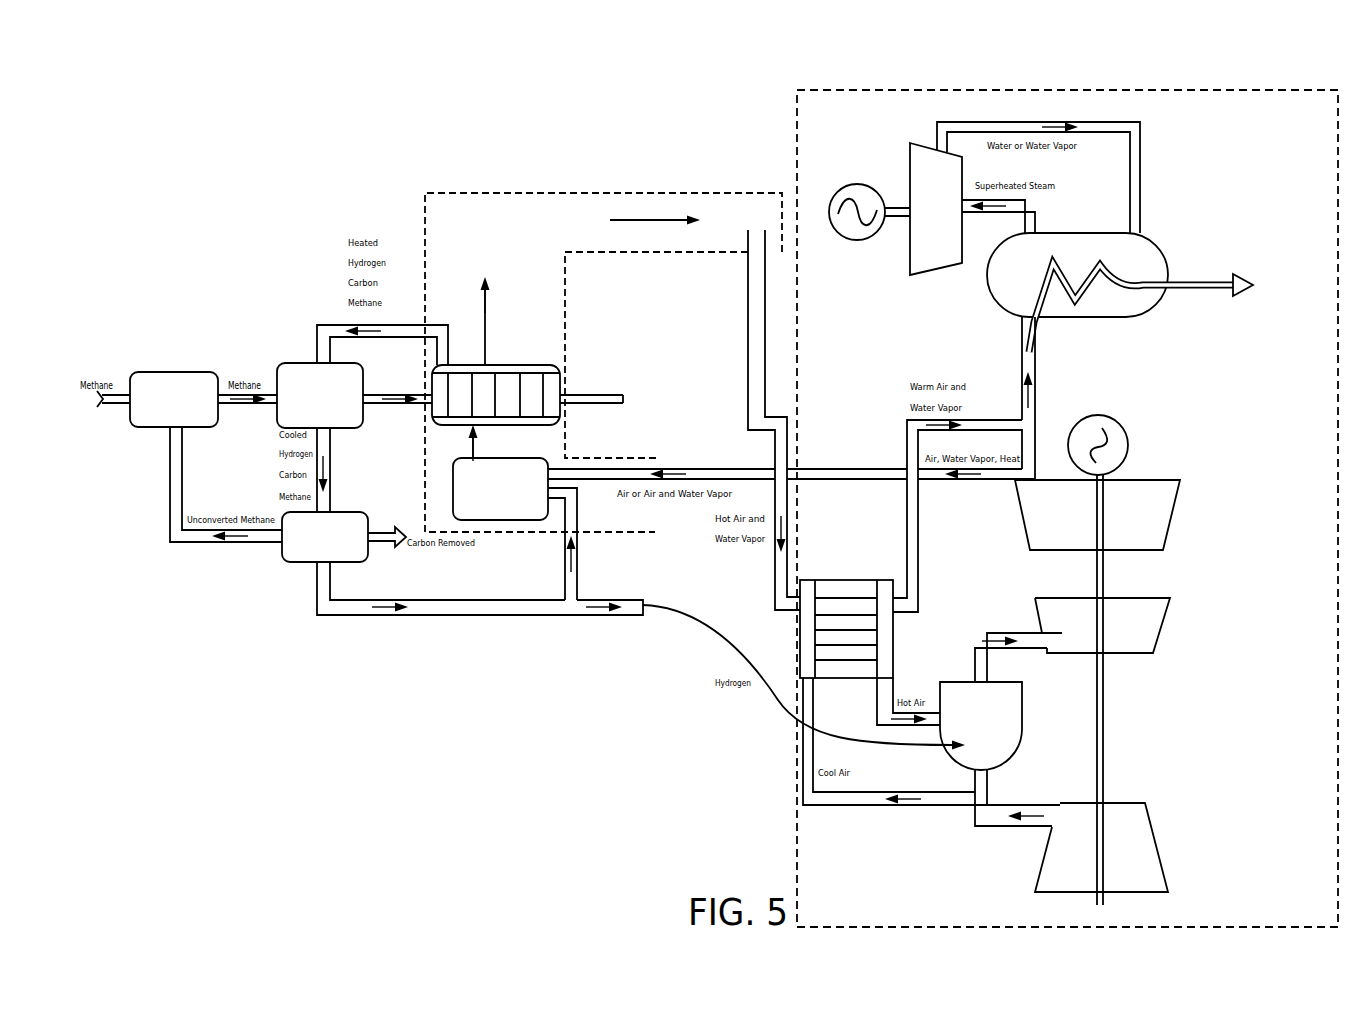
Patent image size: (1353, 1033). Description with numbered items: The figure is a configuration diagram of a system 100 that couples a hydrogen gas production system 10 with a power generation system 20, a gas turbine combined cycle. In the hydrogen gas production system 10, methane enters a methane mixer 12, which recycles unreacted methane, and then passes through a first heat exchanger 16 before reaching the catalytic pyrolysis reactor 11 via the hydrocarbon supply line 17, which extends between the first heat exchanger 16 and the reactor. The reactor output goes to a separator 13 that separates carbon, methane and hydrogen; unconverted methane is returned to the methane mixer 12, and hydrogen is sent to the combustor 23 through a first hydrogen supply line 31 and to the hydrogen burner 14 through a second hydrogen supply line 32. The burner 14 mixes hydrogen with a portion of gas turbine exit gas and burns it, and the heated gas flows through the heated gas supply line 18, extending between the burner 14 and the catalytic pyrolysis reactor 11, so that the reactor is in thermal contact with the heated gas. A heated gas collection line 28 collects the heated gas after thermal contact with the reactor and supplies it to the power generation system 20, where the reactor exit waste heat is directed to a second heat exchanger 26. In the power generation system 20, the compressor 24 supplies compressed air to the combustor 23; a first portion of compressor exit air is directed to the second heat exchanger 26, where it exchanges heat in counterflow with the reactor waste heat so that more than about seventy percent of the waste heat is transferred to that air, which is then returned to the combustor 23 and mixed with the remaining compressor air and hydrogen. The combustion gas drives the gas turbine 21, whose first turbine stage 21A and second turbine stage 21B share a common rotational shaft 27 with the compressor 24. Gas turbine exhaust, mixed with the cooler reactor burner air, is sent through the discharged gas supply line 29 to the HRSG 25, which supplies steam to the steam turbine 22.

The system 100 is at (744, 83).
The hydrogen gas production system 10 is at (534, 168).
The heated gas collection line 28 is at (501, 238).
The methane mixer 12 is at (170, 371).
The first heat exchanger 16 is at (333, 429).
The hydrocarbon supply line 17 is at (377, 407).
The separator 13 is at (297, 563).
The first hydrogen supply line 31 is at (633, 615).
The second hydrogen supply line 32 is at (580, 592).
The burner 14 is at (453, 488).
The heated gas supply line 18 is at (451, 458).
The catalytic pyrolysis reactor 11 is at (532, 365).
The power generation system 20 is at (1082, 80).
The steam turbine 22 is at (937, 266).
The HRSG 25 is at (1157, 243).
The discharged gas supply line 29 is at (1019, 380).
The second heat exchanger 26 is at (843, 593).
The gas turbine 21 is at (1151, 660).
The common rotational shaft 27 is at (1094, 725).
The second turbine stage 21B is at (1170, 517).
The first turbine stage 21A is at (1158, 627).
The combustor 23 is at (1018, 745).
The compressor 24 is at (1157, 840).